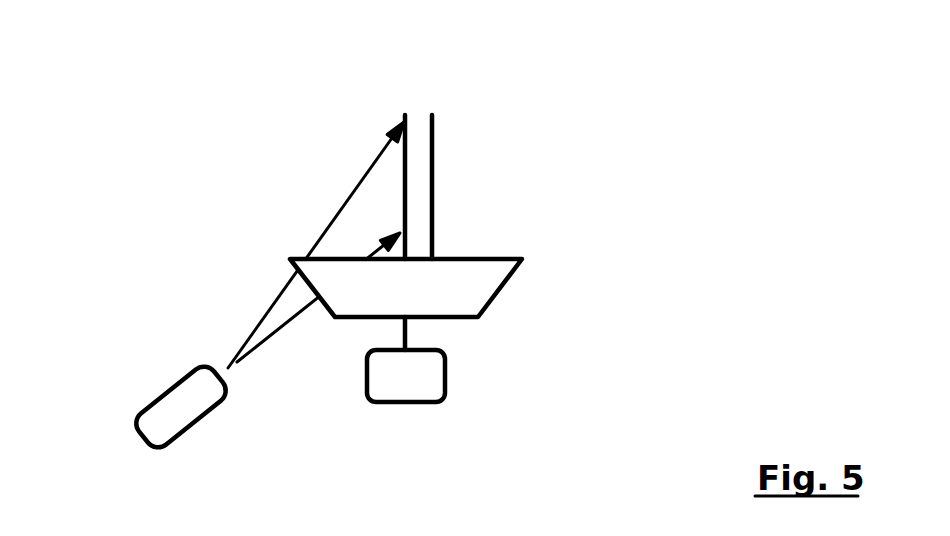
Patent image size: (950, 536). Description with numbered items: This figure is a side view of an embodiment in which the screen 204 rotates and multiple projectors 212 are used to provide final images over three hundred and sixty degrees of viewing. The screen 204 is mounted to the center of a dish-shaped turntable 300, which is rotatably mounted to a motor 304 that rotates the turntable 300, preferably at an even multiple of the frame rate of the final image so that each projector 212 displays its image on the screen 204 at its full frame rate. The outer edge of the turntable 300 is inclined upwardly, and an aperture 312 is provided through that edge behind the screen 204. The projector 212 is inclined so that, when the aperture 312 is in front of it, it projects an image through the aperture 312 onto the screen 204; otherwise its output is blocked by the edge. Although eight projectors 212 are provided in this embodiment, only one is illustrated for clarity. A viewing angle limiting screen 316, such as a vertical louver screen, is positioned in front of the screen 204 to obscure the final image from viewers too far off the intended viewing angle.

The turntable 300 is at (641, 172).
The screen 204 is at (414, 152).
The viewing angle limiting screen 316 is at (446, 168).
The aperture 312 is at (292, 286).
The projector 212 is at (131, 392).
The motor 304 is at (465, 378).